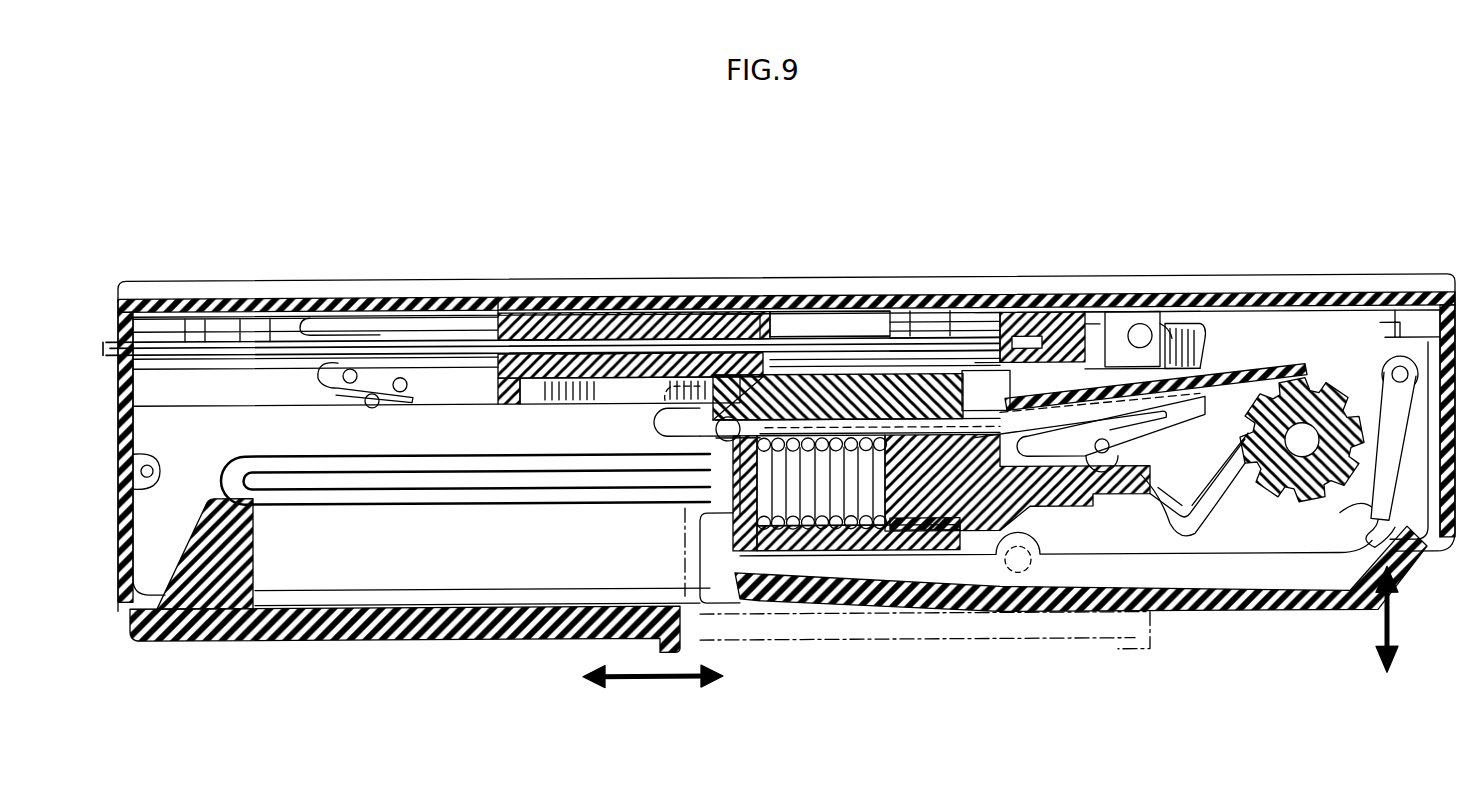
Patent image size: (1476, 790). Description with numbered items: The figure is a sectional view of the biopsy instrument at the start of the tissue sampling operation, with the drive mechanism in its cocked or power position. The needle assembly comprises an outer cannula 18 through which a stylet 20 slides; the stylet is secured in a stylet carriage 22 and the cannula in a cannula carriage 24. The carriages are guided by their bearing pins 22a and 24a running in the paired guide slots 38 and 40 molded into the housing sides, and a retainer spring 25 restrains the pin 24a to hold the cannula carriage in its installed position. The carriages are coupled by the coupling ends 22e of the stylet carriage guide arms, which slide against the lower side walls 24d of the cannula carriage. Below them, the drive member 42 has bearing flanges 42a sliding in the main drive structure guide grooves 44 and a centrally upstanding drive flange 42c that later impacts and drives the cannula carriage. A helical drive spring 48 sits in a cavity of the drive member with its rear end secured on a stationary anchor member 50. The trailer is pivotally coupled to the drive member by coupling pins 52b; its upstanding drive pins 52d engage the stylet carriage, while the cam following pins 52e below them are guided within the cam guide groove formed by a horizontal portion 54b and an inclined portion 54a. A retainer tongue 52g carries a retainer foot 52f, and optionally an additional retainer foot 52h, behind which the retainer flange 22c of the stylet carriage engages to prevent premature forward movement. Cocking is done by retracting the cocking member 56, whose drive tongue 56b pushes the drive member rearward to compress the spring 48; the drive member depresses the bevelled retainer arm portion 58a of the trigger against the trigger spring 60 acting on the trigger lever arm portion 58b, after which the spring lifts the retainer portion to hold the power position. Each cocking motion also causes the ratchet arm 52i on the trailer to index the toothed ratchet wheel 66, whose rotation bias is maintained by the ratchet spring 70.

The outer cannula 18 is at (262, 343).
The guide slot 40 is at (330, 330).
The retainer spring 25 is at (345, 365).
The cannula hub or carriage 24 is at (618, 318).
The bearing pin 24a is at (515, 297).
The lower side wall 24d is at (585, 355).
The drive member 42 is at (670, 378).
The coupling end 22e is at (706, 335).
The drive flange 42c is at (738, 376).
The bearing flange 42a is at (796, 380).
The inclined portion of cam guide groove 54a is at (664, 422).
The horizontal portion of cam guide groove 54b is at (960, 342).
The stylet 20 is at (980, 368).
The guide slot 38 is at (990, 316).
The additional retainer foot 52h is at (1035, 345).
The stylet hub or carriage 22 is at (1075, 305).
The bearing pin 22a is at (1140, 335).
The retainer flange 22c is at (1170, 340).
The drive pin 52d is at (1185, 345).
The cam following pin 52e is at (1262, 372).
The ratchet arm 52i is at (1318, 368).
The retainer foot 52f is at (1120, 398).
The retainer tongue 52g is at (1125, 418).
The coupling pin 52b is at (700, 462).
The ratchet wheel 66 is at (1395, 364).
The main drive structure guide groove 44 is at (393, 484).
The cocking member 56 is at (1010, 646).
The drive tongue 56b is at (233, 630).
The retainer arm portion 58a is at (740, 560).
The helical drive spring 48 is at (822, 535).
The stationary anchor member 50 is at (912, 560).
The trigger lever arm portion 58b is at (1335, 622).
The ratchet spring 70 is at (1198, 505).
The trigger spring 60 is at (1362, 525).